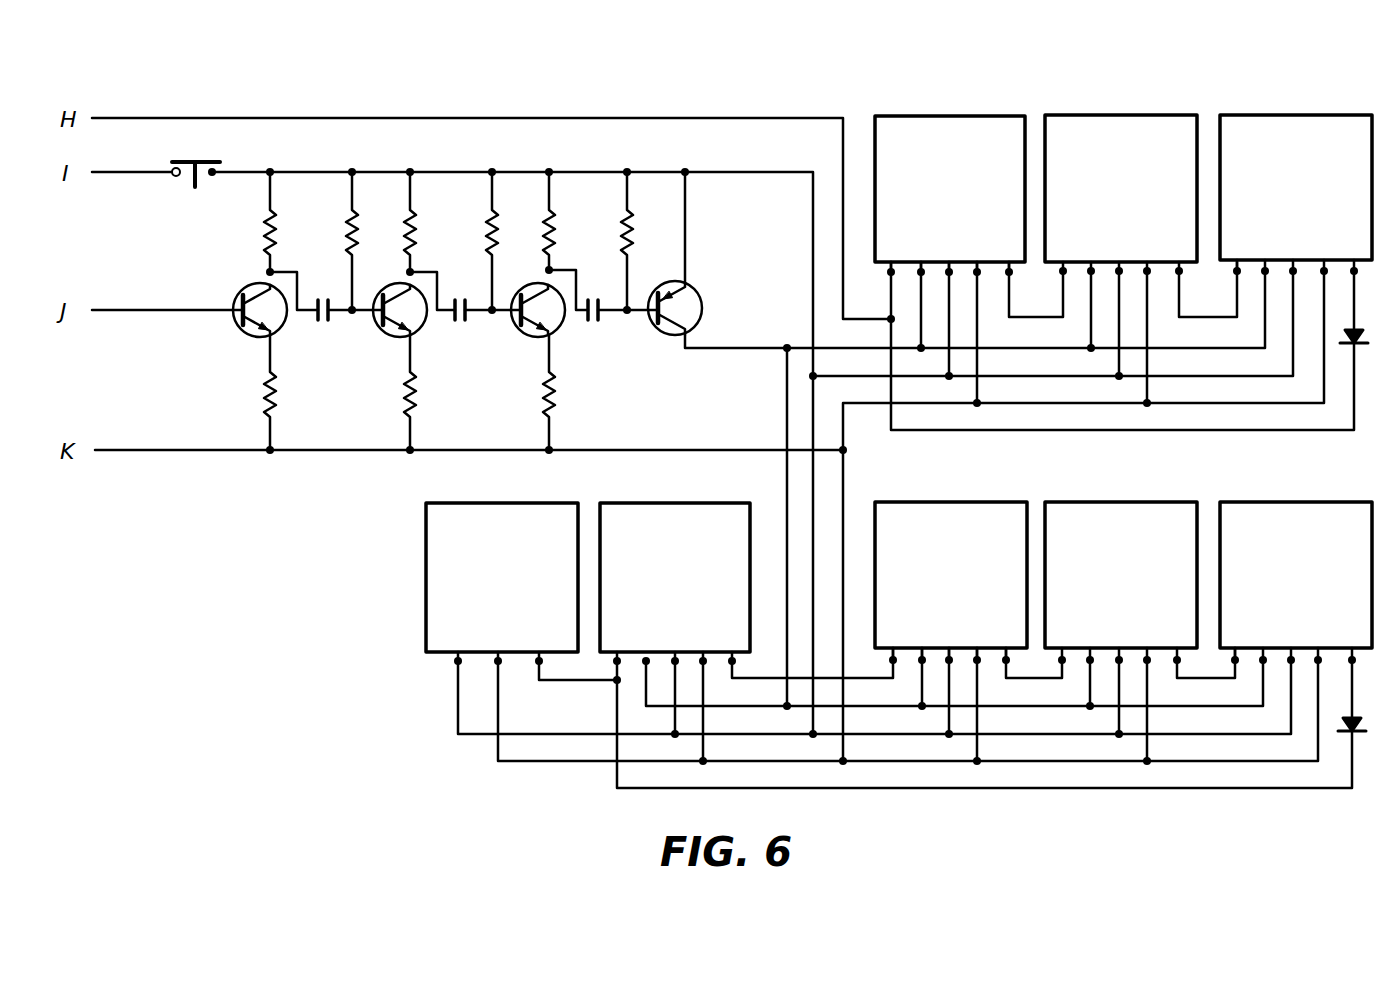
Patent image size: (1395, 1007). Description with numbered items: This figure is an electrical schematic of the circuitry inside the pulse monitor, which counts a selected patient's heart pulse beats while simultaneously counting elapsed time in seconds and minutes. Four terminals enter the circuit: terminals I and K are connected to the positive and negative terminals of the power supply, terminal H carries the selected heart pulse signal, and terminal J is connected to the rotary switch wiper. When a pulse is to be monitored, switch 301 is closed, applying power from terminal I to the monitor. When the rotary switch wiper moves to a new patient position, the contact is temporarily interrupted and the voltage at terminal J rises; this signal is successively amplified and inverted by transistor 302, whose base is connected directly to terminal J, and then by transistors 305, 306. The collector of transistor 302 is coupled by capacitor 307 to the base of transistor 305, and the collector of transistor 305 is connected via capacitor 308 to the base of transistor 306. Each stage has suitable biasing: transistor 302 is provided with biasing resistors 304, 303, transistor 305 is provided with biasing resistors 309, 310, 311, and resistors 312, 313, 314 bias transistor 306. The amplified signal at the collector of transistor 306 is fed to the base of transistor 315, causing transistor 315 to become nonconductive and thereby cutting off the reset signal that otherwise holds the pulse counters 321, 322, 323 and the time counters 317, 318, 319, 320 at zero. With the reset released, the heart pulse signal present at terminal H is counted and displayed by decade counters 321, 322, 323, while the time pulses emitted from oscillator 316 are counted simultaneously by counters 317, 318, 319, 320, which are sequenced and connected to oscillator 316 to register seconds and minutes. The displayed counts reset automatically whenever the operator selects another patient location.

The switch 301 is at (197, 160).
The transistor 302 is at (263, 337).
The biasing resistor 303 is at (266, 410).
The biasing resistor 304 is at (266, 222).
The transistor 305 is at (399, 338).
The transistor 306 is at (540, 338).
The capacitor 307 is at (330, 324).
The capacitor 308 is at (468, 324).
The biasing resistor 309 is at (349, 220).
The biasing resistor 310 is at (406, 400).
The biasing resistor 311 is at (407, 220).
The biasing resistor 312 is at (489, 220).
The biasing resistor 313 is at (547, 220).
The biasing resistor 314 is at (547, 400).
The transistor 315 is at (684, 338).
The oscillator 316 is at (487, 503).
The time counter 317 is at (656, 503).
The time counter 318 is at (939, 502).
The time counter 319 is at (1108, 502).
The time counter 320 is at (1282, 502).
The decade counter 321 is at (932, 116).
The decade counter 322 is at (1102, 115).
The decade counter 323 is at (1278, 115).